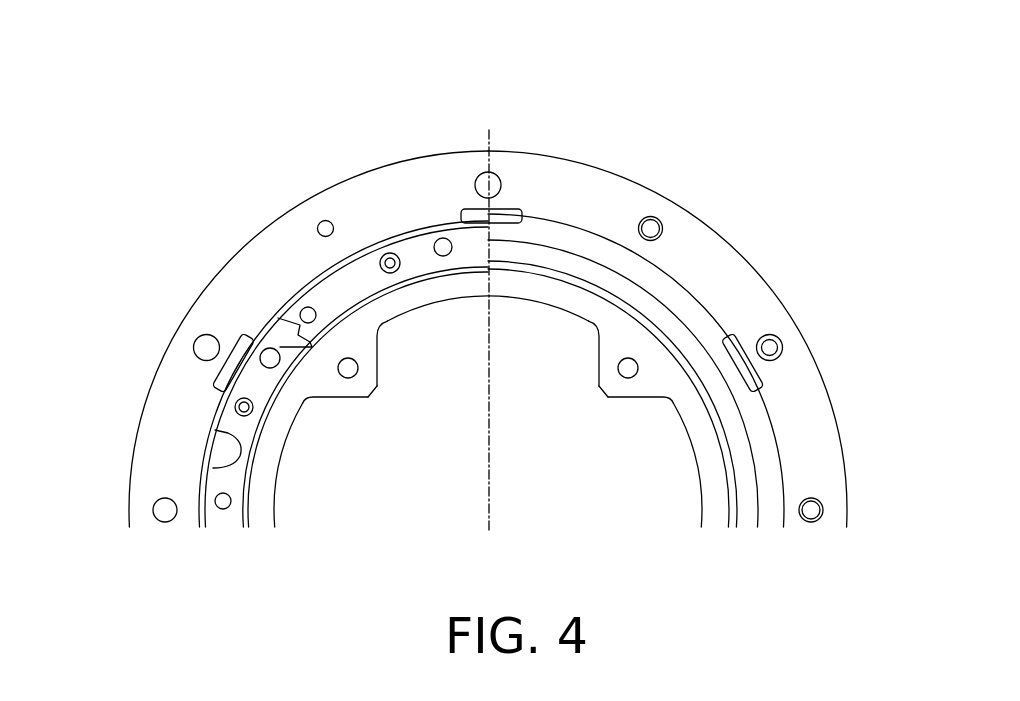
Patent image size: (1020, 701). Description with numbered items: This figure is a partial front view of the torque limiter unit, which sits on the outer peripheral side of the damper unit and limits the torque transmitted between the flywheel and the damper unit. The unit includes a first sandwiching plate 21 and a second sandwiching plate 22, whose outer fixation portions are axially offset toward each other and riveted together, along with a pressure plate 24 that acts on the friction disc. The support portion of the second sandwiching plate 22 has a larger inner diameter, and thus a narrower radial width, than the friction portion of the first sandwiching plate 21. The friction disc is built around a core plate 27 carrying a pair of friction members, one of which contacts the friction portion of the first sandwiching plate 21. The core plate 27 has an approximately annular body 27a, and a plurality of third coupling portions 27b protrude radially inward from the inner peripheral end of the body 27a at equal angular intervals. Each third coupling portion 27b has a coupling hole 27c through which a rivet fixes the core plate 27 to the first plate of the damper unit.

The first sandwiching plate 21 is at (268, 245).
The second sandwiching plate 22 is at (612, 180).
The pressure plate 24 is at (370, 262).
The core plate 27 is at (472, 303).
The body 27a is at (225, 433).
The third coupling portion 27b is at (343, 390).
The coupling hole 27c is at (358, 373).